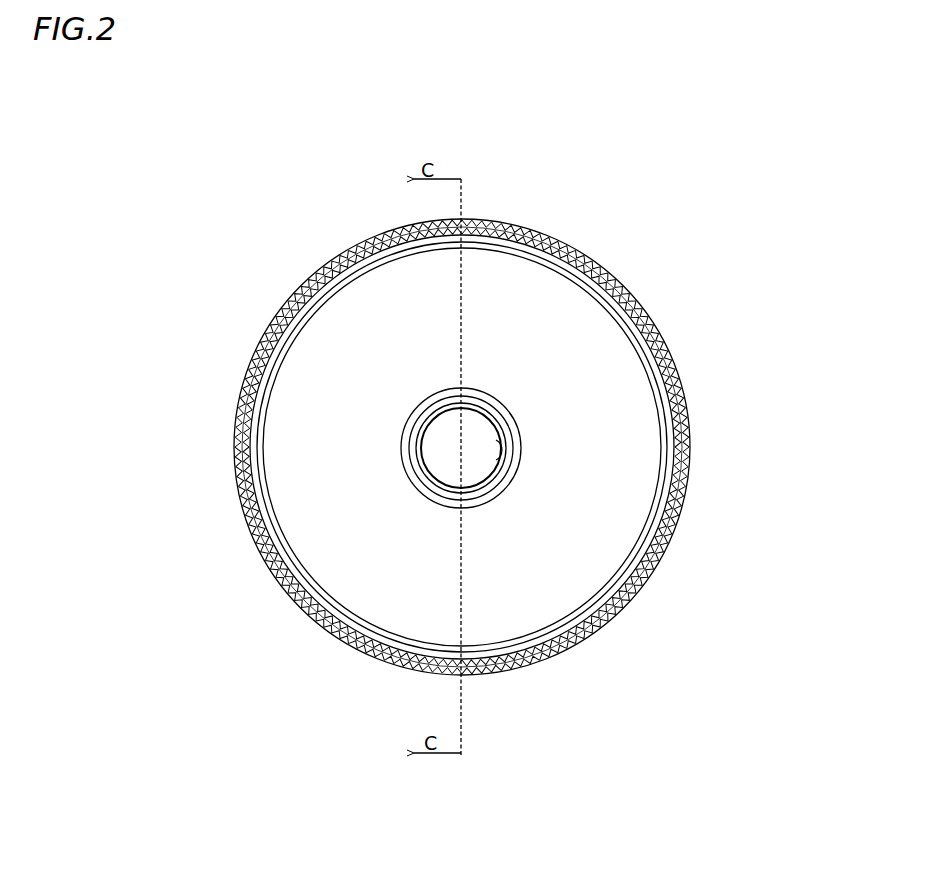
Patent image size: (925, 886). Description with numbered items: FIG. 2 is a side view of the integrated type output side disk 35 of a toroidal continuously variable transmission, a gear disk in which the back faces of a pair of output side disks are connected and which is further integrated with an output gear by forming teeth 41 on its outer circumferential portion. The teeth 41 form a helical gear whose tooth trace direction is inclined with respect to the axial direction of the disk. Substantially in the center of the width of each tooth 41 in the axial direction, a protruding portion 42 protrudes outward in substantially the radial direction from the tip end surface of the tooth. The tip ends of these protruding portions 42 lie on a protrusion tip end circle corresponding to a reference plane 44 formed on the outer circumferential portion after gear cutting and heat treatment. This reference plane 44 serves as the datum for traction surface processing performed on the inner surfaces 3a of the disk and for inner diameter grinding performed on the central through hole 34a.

The inner surface 3a is at (590, 360).
The through hole 34a is at (495, 460).
The integrated type output side disk 35 is at (540, 292).
The tooth 41 is at (358, 246).
The protruding portion 42 is at (515, 232).
The reference plane 44 is at (488, 225).